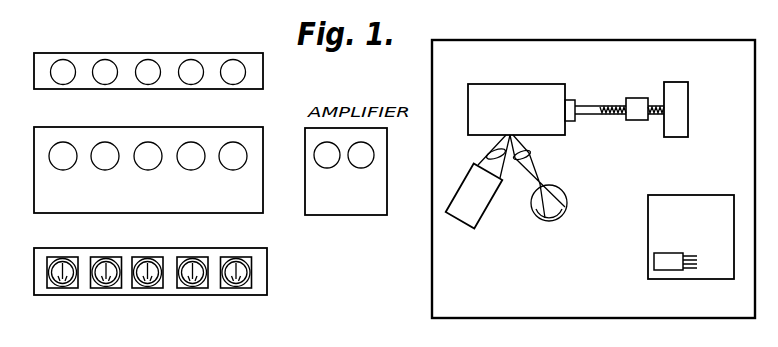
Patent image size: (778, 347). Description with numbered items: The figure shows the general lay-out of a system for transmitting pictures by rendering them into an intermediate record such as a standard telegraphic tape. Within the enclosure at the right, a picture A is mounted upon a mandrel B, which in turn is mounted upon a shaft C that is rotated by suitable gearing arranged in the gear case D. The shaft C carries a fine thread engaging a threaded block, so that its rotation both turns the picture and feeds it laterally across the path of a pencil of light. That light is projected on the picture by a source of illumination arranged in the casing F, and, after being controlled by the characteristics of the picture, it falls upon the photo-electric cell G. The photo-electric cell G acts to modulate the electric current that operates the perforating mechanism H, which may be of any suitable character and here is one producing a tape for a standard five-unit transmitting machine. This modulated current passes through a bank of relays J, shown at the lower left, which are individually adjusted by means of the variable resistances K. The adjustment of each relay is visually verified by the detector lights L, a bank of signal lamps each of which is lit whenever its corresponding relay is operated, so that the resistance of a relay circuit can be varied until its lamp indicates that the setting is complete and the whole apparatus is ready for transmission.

The detector lights L is at (175, 68).
The variable resistances K is at (148, 158).
The bank of relays J is at (182, 262).
The picture A is at (516, 109).
The mandrel B is at (572, 117).
The shaft C is at (598, 109).
The gear case D is at (682, 123).
The casing F is at (478, 181).
The photo-electric cell G is at (553, 221).
The perforating mechanism H is at (673, 262).